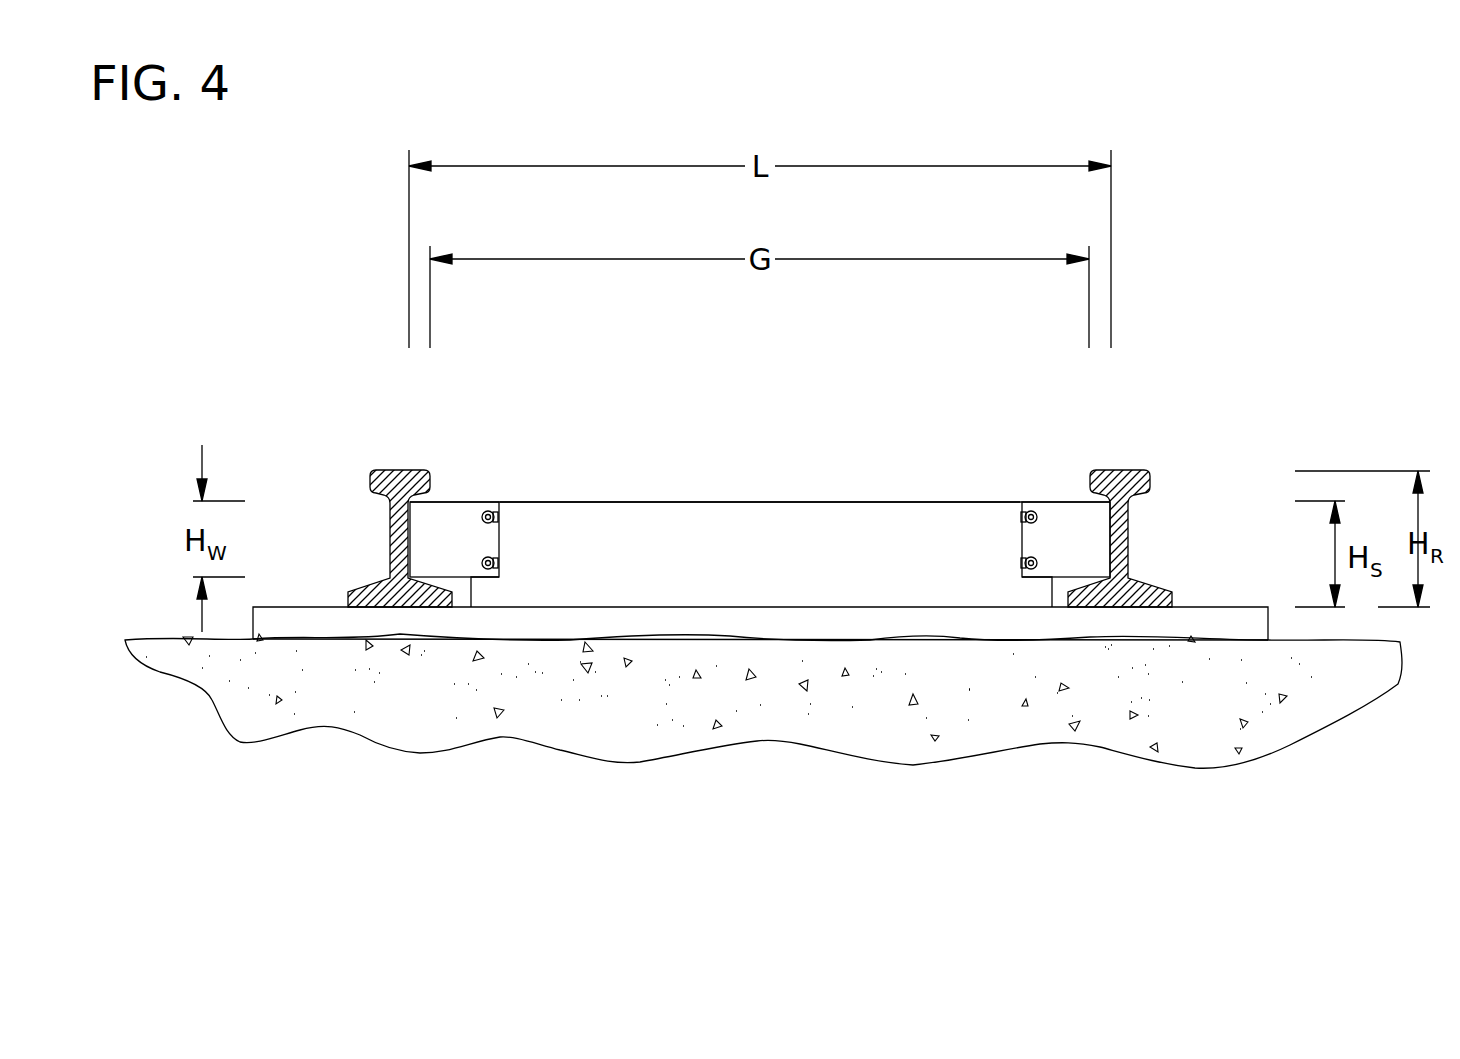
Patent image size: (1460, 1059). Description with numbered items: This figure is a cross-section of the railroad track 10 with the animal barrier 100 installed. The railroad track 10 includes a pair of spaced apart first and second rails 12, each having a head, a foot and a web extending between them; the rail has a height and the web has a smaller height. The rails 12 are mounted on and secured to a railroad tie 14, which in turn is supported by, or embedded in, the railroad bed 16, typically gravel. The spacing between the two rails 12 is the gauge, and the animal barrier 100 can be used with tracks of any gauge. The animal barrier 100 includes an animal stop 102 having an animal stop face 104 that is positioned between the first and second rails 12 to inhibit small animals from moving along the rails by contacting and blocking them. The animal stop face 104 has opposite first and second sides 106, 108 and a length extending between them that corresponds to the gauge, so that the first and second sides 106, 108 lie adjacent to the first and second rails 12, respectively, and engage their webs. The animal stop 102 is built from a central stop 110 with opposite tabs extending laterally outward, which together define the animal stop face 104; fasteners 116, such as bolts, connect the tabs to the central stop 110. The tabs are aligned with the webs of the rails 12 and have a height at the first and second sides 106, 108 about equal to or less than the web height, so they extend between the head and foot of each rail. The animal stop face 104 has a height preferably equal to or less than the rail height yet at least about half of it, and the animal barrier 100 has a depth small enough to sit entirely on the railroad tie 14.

The railroad track 10 is at (1153, 483).
The rail 12 is at (371, 483).
The railroad tie 14 is at (1230, 625).
The railroad bed 16 is at (728, 746).
The animal barrier 100 is at (761, 468).
The animal stop 102 is at (742, 497).
The animal stop face 104 is at (792, 571).
The first side 106 is at (455, 515).
The second side 108 is at (1065, 515).
The central stop 110 is at (658, 518).
The fasteners 116 is at (495, 562).